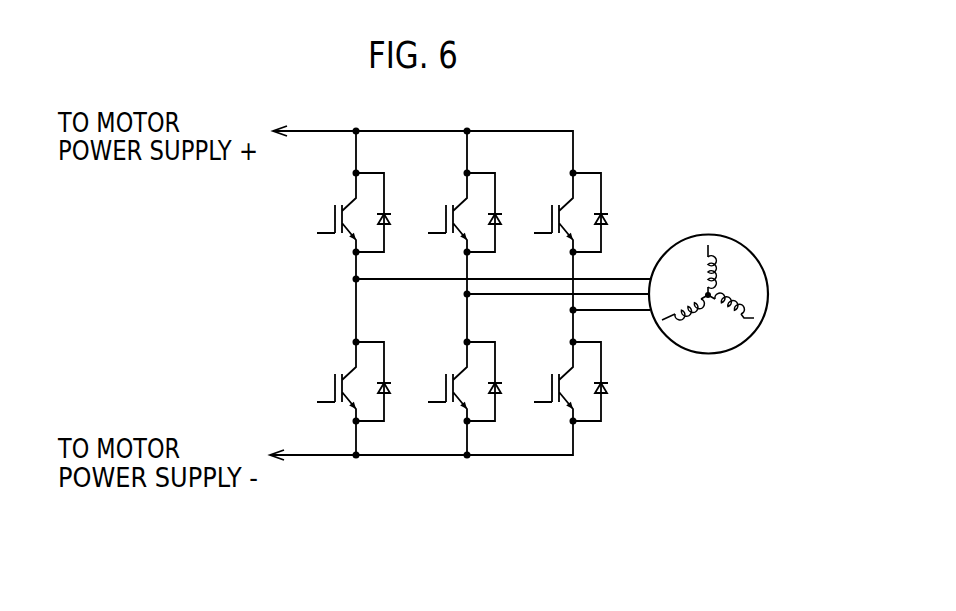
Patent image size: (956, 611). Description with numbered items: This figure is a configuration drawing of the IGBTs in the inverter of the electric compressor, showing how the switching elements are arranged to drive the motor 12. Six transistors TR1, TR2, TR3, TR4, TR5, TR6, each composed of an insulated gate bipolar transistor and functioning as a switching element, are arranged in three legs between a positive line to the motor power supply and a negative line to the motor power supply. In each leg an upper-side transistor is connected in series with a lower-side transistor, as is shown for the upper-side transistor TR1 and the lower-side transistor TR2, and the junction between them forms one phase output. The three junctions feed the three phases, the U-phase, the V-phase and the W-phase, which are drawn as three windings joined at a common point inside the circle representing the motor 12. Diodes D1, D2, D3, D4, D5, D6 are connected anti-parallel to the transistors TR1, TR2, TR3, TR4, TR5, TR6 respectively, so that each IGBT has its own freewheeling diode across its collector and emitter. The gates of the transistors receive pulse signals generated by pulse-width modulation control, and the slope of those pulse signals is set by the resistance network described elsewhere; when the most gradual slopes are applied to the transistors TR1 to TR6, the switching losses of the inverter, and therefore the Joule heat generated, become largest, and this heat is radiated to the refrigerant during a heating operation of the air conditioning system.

The motor 12 is at (755, 255).
The upper-side transistor TR1 is at (335, 213).
The lower-side transistor TR2 is at (335, 382).
The transistor TR3 is at (446, 213).
The transistor TR4 is at (446, 382).
The transistor TR5 is at (552, 213).
The transistor TR6 is at (552, 382).
The diode D1 is at (385, 214).
The diode D2 is at (385, 383).
The diode D3 is at (496, 214).
The diode D4 is at (496, 383).
The diode D5 is at (602, 214).
The diode D6 is at (602, 383).